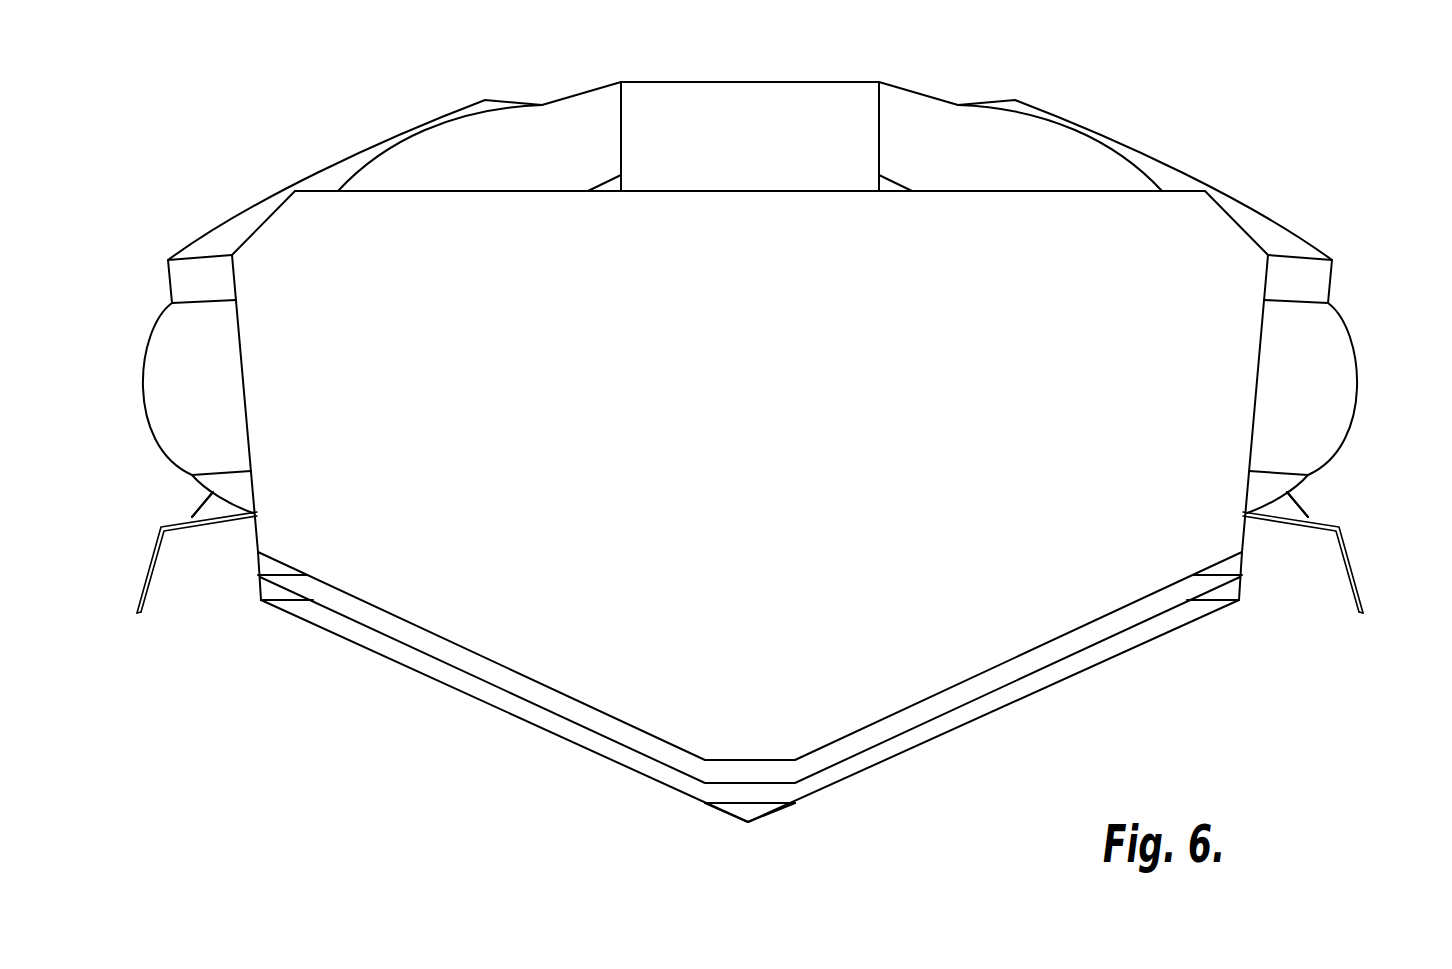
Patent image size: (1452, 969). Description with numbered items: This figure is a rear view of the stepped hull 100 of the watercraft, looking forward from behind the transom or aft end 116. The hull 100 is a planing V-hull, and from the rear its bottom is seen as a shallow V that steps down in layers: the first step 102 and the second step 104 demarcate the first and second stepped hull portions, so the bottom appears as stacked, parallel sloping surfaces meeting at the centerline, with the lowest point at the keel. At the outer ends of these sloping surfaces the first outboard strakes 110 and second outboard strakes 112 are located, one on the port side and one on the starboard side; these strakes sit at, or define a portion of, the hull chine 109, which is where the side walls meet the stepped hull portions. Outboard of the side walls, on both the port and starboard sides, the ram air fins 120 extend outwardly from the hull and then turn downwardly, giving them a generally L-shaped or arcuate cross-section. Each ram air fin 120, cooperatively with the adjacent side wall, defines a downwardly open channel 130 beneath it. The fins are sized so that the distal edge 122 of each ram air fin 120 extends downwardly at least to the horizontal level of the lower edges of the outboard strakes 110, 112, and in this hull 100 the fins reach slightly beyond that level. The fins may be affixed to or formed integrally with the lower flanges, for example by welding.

The stepped hull 100 is at (751, 459).
The first step 102 is at (942, 727).
The second step 104 is at (1040, 658).
The hull chine 109 is at (750, 823).
The first outboard strakes 110 is at (270, 592).
The second outboard strakes 112 is at (260, 562).
The transom or aft end 116 is at (765, 395).
The ram air fins 120 is at (148, 568).
The distal edge 122 is at (138, 613).
The downwardly open channel 130 is at (182, 562).